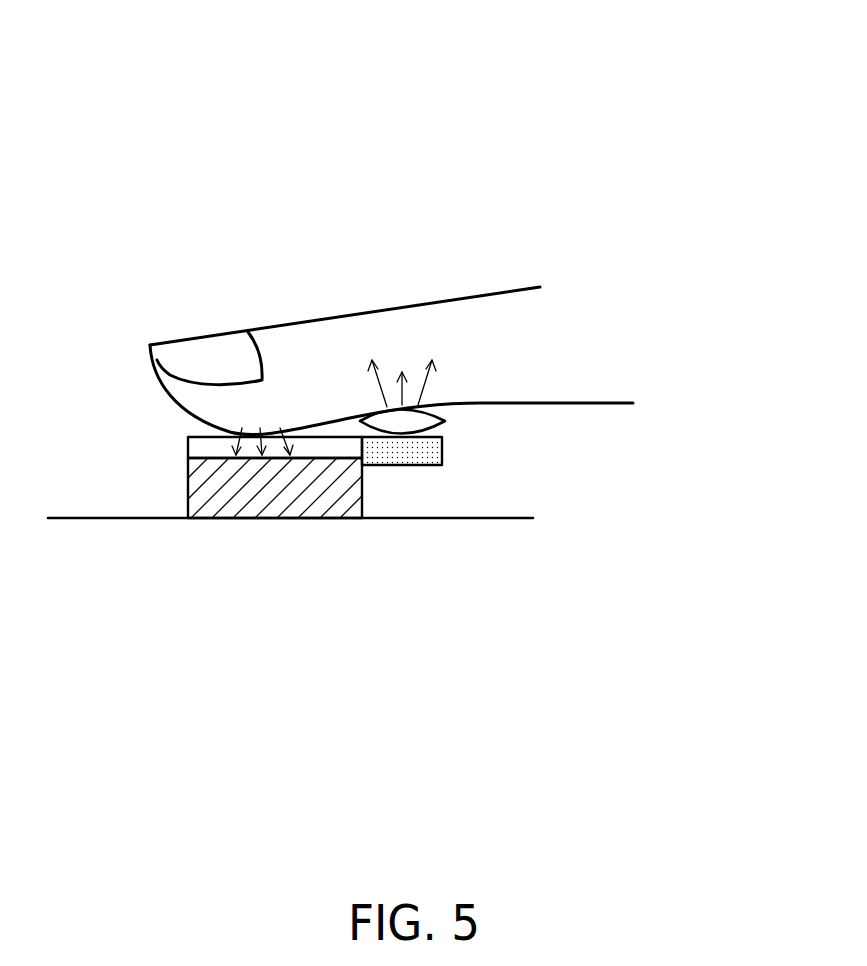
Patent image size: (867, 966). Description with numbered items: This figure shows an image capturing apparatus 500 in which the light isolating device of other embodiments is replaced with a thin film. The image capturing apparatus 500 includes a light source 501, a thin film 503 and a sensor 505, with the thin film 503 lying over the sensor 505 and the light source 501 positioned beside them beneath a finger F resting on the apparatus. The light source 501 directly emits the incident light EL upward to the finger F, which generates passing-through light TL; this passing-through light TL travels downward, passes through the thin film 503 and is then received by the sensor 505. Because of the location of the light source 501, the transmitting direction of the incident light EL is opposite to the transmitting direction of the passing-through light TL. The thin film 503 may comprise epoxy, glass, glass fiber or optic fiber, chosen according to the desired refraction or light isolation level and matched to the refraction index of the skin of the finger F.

The image capturing apparatus 500 is at (656, 97).
The light source 501 is at (403, 466).
The thin film 503 is at (187, 442).
The sensor 505 is at (275, 518).
The finger F is at (361, 312).
The incident light EL is at (414, 397).
The passing-through light TL is at (282, 446).